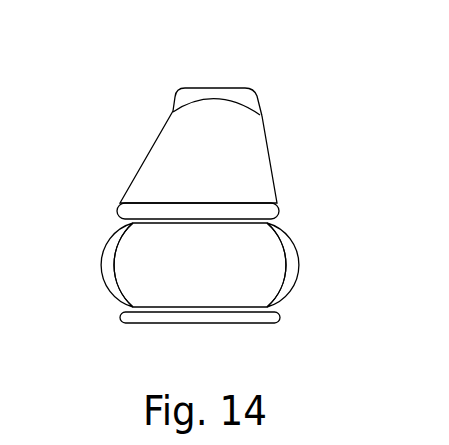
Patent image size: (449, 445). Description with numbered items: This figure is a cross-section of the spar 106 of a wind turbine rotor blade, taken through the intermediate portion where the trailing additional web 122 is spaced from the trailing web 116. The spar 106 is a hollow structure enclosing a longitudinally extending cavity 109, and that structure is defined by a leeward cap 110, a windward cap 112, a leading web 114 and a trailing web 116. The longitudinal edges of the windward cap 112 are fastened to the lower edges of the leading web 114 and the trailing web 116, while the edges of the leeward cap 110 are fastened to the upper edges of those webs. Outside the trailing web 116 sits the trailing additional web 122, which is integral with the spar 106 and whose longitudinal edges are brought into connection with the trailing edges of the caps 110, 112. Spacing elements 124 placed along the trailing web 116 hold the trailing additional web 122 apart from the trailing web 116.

The spar 106 is at (138, 78).
The cavity 109 is at (221, 277).
The leeward cap 110 is at (108, 266).
The windward cap 112 is at (297, 272).
The leading web 114 is at (243, 312).
The trailing web 116 is at (248, 218).
The trailing additional web 122 is at (225, 99).
The spacing elements 124 is at (240, 164).